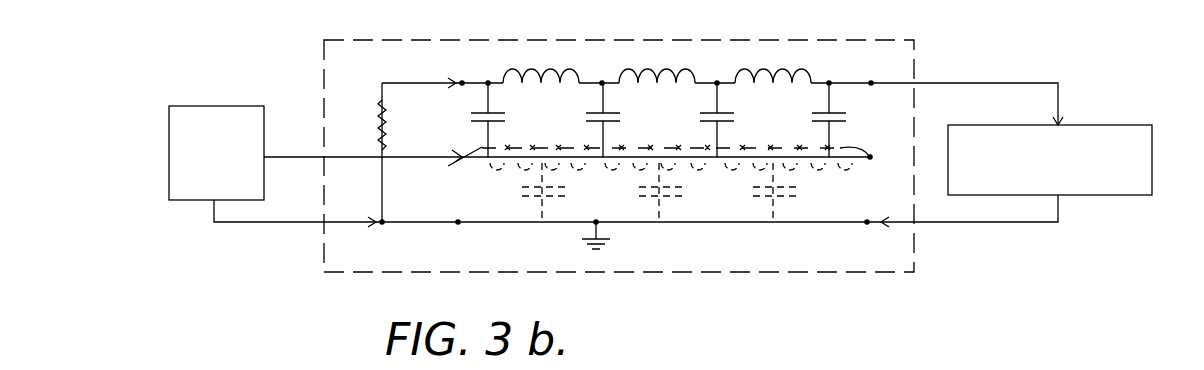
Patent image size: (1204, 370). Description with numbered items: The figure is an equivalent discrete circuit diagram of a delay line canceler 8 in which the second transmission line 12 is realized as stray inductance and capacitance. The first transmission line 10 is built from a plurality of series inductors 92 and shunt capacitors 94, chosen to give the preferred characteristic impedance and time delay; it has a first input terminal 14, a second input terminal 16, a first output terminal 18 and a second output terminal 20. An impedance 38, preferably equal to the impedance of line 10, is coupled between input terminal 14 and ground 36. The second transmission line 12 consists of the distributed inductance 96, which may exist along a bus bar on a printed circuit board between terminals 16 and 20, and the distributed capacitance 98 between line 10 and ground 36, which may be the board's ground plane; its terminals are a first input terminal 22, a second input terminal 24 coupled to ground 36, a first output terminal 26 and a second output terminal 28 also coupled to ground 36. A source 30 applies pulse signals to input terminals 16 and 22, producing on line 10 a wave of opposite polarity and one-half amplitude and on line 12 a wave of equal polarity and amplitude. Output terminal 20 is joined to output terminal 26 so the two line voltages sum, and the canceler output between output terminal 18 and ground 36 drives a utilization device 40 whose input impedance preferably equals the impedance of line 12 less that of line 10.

The delay line canceler 8 is at (772, 272).
The first transmission line 10 is at (440, 120).
The second transmission line 12 is at (449, 207).
The first input terminal 14 is at (462, 82).
The second input terminal 16 is at (463, 151).
The first output terminal 18 is at (871, 82).
The second output terminal 20 is at (870, 157).
The first input terminal 22 is at (463, 161).
The second input terminal 24 is at (458, 223).
The first output terminal 26 is at (870, 158).
The second output terminal 28 is at (867, 223).
The source 30 is at (177, 106).
The ground 36 is at (604, 237).
The impedance 38 is at (377, 112).
The device 40 is at (1100, 125).
The inductors 92 is at (532, 69).
The capacitors 94 is at (505, 117).
The distributed inductance 96 is at (832, 170).
The distributed capacitance 98 is at (562, 195).